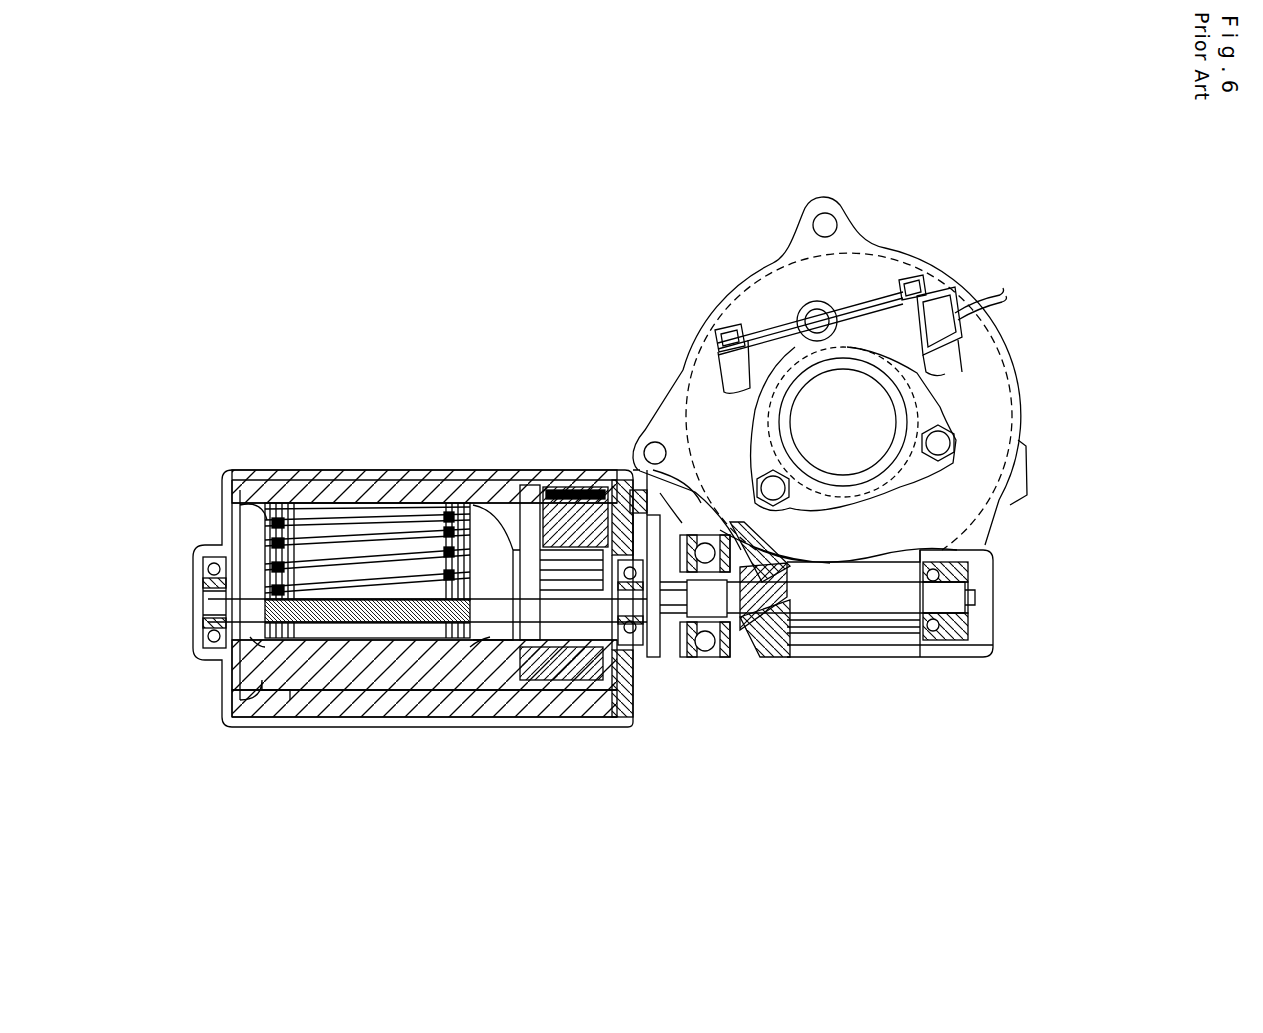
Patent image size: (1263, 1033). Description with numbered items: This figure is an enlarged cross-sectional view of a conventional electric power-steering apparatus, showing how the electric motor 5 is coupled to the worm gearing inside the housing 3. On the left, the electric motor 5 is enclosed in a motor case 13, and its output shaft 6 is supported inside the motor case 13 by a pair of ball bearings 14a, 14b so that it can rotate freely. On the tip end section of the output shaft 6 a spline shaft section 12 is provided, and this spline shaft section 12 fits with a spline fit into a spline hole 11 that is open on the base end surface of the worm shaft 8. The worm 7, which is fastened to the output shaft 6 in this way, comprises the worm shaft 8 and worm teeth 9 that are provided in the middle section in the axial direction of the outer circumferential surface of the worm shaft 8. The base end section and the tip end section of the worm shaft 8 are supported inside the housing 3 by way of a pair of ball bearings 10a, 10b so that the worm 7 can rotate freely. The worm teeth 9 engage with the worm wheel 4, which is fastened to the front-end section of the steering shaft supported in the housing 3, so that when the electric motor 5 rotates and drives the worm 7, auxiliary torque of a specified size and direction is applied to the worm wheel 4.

The housing 3 is at (973, 357).
The worm wheel 4 is at (850, 552).
The electric motor 5 is at (352, 497).
The output shaft 6 is at (663, 637).
The worm 7 is at (893, 607).
The worm shaft 8 is at (812, 598).
The worm teeth 9 is at (870, 632).
The ball bearing 10a is at (704, 652).
The ball bearing 10b is at (937, 640).
The spline hole 11 is at (740, 600).
The spline shaft section 12 is at (697, 653).
The motor case 13 is at (443, 477).
The ball bearing 14a is at (215, 640).
The ball bearing 14b is at (640, 642).